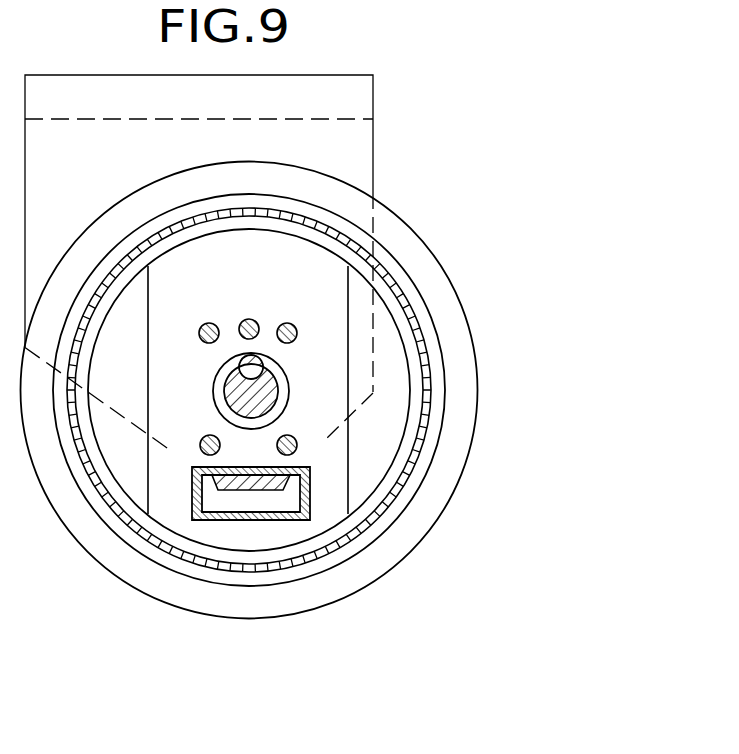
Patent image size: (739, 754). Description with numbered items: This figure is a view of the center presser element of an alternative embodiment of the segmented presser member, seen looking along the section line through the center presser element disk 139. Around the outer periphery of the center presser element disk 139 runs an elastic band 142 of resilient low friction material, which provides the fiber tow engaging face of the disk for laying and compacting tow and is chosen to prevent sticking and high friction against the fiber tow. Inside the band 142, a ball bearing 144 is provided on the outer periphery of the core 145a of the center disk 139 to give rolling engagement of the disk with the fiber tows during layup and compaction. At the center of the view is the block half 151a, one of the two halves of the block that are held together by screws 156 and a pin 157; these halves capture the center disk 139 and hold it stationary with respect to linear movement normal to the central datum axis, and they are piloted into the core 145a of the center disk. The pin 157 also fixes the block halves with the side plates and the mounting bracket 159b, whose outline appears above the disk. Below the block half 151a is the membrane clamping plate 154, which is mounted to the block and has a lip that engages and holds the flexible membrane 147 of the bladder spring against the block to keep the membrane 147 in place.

The mounting bracket 159b is at (373, 97).
The center presser element disk 139 is at (486, 440).
The elastic band 142 is at (403, 545).
The ball bearing 144 is at (413, 483).
The core 145a is at (335, 408).
The block half 151a is at (273, 378).
The screws 156 is at (209, 323).
The pin 157 is at (255, 321).
The flexible membrane 147 is at (193, 500).
The membrane clamping plate 154 is at (240, 491).